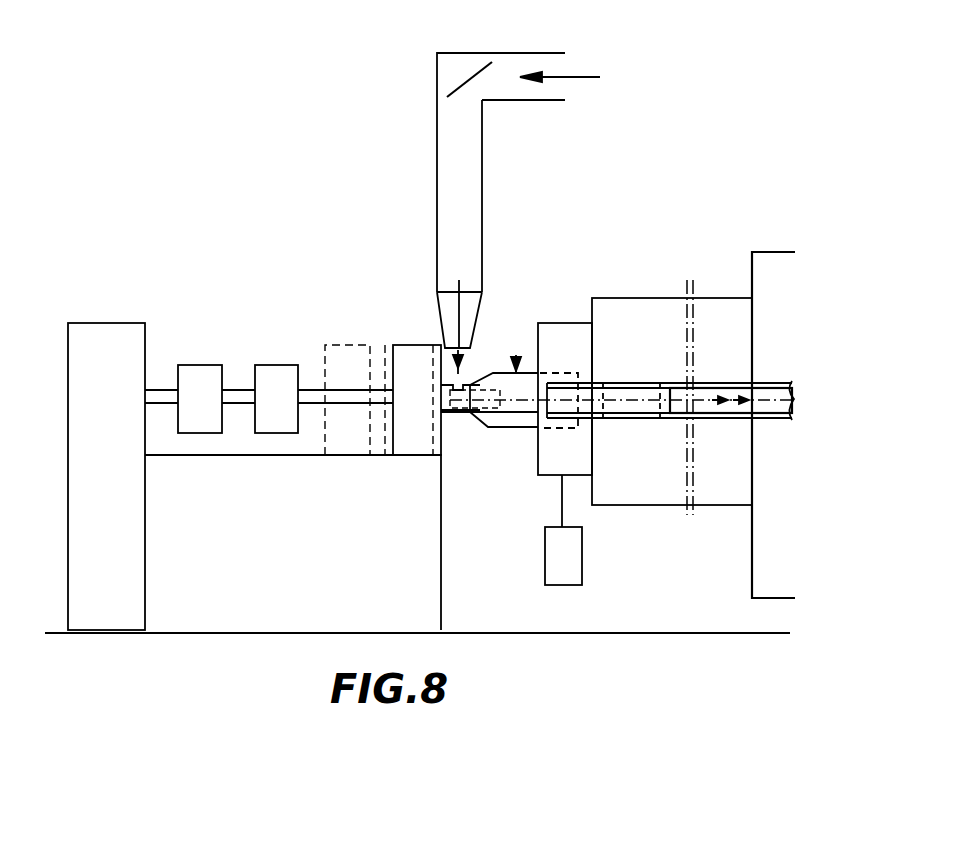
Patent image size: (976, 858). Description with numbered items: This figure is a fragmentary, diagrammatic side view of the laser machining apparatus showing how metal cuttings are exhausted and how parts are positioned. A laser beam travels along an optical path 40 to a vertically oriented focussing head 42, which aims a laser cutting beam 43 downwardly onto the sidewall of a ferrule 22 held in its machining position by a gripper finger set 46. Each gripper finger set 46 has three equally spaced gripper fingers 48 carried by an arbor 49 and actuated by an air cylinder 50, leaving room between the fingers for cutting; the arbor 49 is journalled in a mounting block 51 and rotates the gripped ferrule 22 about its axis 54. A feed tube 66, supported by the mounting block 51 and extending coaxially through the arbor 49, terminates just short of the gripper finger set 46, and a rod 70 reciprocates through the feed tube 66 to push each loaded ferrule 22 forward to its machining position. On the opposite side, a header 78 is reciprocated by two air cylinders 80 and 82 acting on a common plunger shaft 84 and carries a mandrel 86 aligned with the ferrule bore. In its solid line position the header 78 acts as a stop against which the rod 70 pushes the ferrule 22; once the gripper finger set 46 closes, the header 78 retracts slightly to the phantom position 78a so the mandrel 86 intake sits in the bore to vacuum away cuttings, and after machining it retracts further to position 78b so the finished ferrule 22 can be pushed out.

The optical path 40 is at (553, 77).
The focussing head 42 is at (479, 320).
The laser cutting beam 43 is at (463, 363).
The gripper finger set 46 is at (516, 356).
The ferrule 22 is at (459, 418).
The mandrel 86 is at (490, 415).
The gripper finger 48 is at (513, 422).
The feed tube 66 is at (725, 387).
The rod 70 is at (716, 404).
The ferrule axis 54 is at (777, 398).
The arbor 49 is at (702, 492).
The mounting block 51 is at (750, 568).
The air cylinder 50 is at (575, 565).
The header 78 is at (410, 440).
The header phantom line position 78a is at (386, 352).
The header phantom line position 78b is at (330, 345).
The air cylinder 80 is at (268, 365).
The air cylinder 82 is at (208, 365).
The plunger shaft 84 is at (310, 405).